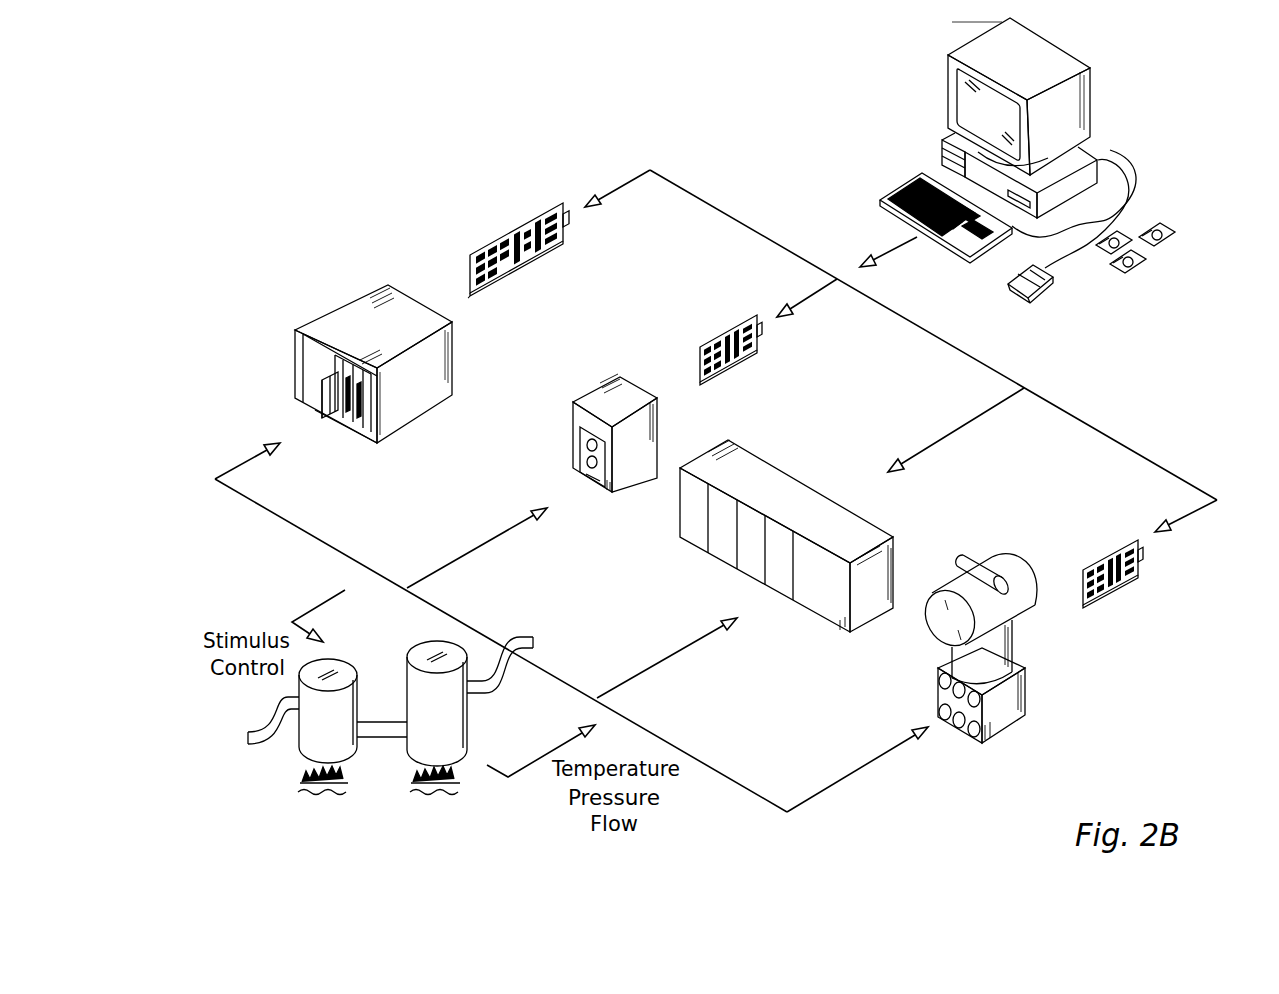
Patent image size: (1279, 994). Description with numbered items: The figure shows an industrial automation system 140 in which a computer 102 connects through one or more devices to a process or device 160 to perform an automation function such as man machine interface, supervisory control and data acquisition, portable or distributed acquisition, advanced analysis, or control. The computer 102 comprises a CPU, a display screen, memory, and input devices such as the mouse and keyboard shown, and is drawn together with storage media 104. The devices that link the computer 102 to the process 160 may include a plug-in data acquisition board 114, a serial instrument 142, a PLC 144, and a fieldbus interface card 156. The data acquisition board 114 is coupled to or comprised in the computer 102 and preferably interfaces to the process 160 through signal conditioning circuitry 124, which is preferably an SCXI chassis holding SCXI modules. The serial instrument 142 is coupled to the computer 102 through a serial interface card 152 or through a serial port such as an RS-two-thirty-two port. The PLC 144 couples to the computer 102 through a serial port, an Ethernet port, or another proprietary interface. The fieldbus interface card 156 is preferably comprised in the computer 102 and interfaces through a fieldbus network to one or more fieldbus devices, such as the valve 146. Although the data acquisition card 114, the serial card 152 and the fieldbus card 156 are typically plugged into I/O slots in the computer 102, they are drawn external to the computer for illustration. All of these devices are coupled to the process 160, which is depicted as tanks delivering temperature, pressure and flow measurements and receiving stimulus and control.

The computer 102 is at (1043, 53).
The memory media (floppy disks) 104 is at (1165, 230).
The data acquisition board 114 is at (513, 227).
The signal conditioning circuitry 124 is at (360, 317).
The industrial automation system 140 is at (288, 136).
The serial instrument 142 is at (610, 383).
The PLC (Programmable Logic Controller) 144 is at (750, 468).
The valve 146 is at (1020, 708).
The serial interface card 152 is at (728, 325).
The fieldbus interface card 156 is at (1115, 553).
The process 160 is at (411, 848).